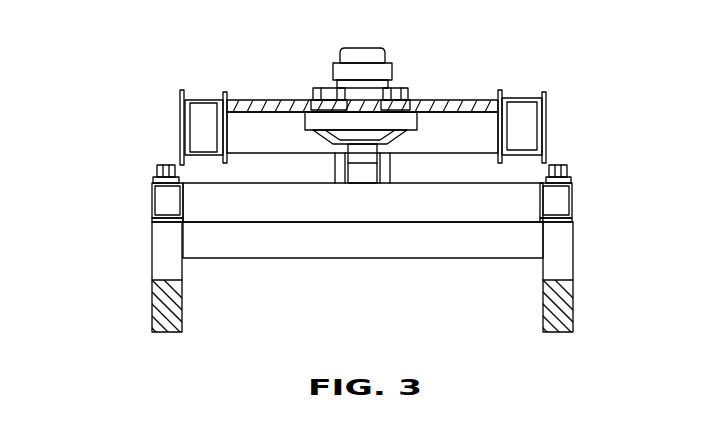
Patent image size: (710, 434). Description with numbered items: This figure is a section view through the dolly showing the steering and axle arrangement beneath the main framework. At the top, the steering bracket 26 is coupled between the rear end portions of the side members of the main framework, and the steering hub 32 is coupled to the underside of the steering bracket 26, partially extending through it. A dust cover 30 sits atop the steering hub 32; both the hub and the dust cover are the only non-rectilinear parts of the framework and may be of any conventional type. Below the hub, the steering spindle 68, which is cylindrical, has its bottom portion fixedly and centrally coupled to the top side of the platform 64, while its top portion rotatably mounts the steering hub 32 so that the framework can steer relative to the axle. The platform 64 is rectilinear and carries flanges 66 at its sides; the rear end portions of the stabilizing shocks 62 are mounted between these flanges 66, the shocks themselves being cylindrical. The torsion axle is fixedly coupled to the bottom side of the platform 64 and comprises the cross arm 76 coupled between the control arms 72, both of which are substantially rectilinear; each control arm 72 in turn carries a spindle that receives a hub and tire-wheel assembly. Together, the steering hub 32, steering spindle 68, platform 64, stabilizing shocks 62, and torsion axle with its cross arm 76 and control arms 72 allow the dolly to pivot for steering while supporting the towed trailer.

The steering bracket 26 is at (226, 107).
The dust cover 30 is at (378, 54).
The steering hub 32 is at (318, 120).
The stabilizing shocks 62 is at (158, 202).
The platform 64 is at (345, 205).
The flanges 66 is at (158, 167).
The steering spindle 68 is at (367, 172).
The control arms 72 is at (160, 260).
The cross arm 76 is at (485, 247).